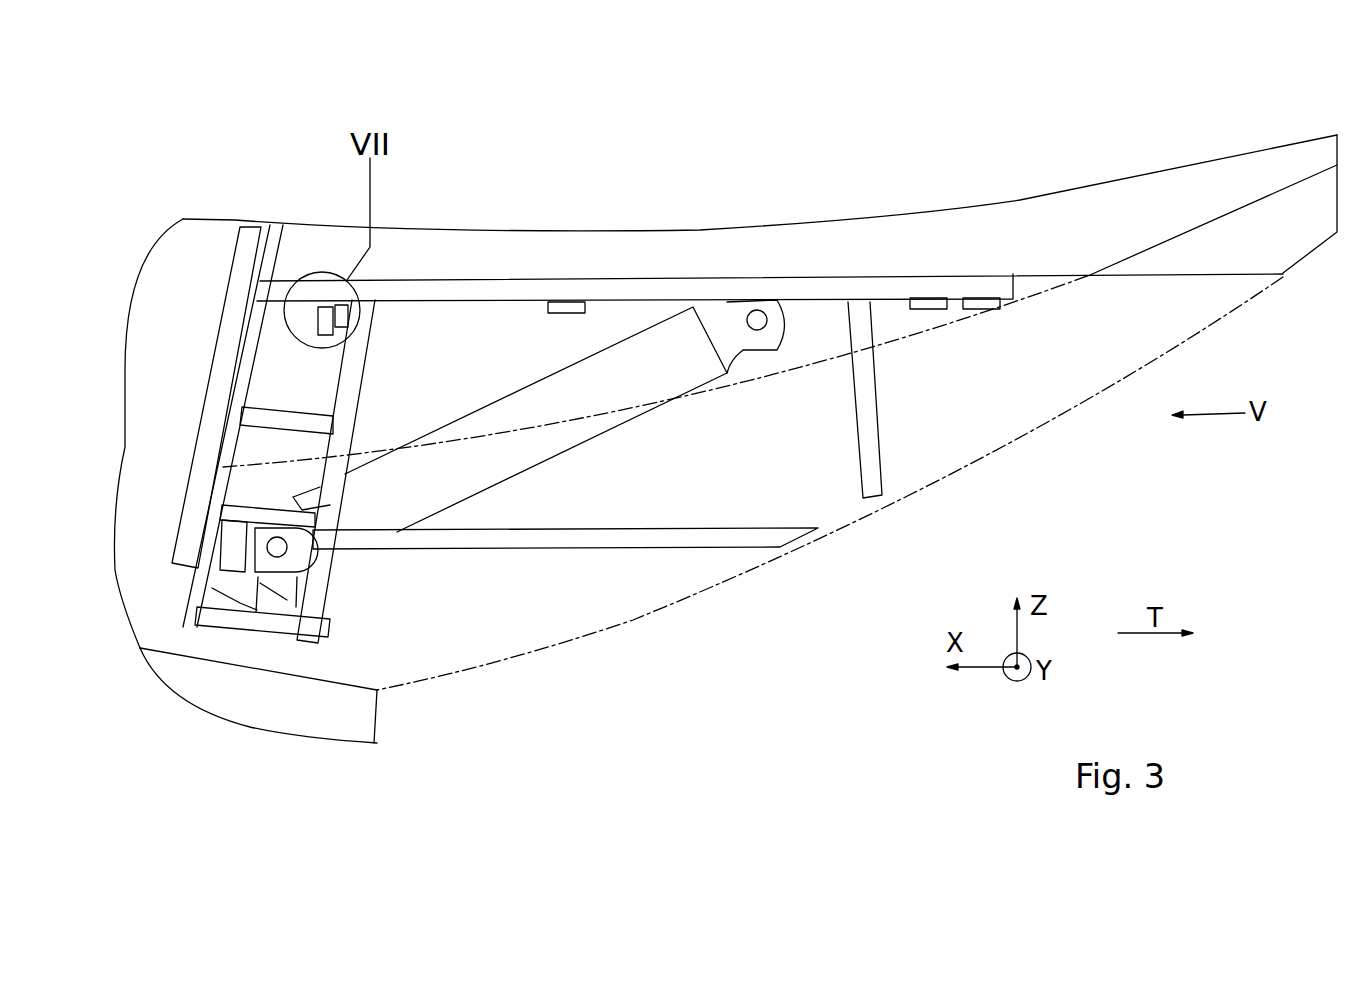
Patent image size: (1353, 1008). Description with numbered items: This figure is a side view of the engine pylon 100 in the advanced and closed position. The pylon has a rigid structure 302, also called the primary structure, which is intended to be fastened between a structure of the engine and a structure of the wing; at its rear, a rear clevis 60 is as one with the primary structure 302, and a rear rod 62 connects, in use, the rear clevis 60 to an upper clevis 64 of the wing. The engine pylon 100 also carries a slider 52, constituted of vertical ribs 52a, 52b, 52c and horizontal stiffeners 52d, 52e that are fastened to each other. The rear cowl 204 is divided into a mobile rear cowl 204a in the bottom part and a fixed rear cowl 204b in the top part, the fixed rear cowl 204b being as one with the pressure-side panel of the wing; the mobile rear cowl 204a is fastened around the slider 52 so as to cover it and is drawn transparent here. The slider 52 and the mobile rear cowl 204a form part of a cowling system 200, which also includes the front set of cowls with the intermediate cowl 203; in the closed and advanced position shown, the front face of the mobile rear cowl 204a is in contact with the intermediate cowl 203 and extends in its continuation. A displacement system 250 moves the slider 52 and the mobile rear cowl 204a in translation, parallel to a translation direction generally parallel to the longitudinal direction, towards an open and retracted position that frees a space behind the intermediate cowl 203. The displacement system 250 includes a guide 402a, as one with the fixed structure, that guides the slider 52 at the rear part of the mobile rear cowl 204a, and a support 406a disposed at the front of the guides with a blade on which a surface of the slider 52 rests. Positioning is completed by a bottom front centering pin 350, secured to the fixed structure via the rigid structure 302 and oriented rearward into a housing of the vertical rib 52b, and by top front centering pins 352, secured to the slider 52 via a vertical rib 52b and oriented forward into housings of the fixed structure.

The slider 52 is at (976, 537).
The vertical rib 52a is at (873, 421).
The vertical rib 52b is at (345, 421).
The vertical rib 52c is at (250, 375).
The horizontal stiffener 52d is at (247, 623).
The horizontal stiffener 52e is at (710, 533).
The rear clevis 60 is at (233, 550).
The rear rod 62 is at (497, 418).
The upper clevis 64 is at (787, 303).
The engine pylon 100 is at (1116, 530).
The cowling system 200 is at (784, 674).
The intermediate cowl 203 is at (177, 280).
The rear cowl 204 is at (1179, 484).
The mobile rear cowl 204a is at (1212, 308).
The fixed rear cowl 204b is at (1075, 212).
The displacement system 250 is at (635, 691).
The rigid structure 302 is at (250, 252).
The bottom front centering pin 350 is at (340, 612).
The top front centering pin 352 is at (348, 313).
The guide 402a is at (933, 305).
The support 406a is at (570, 308).